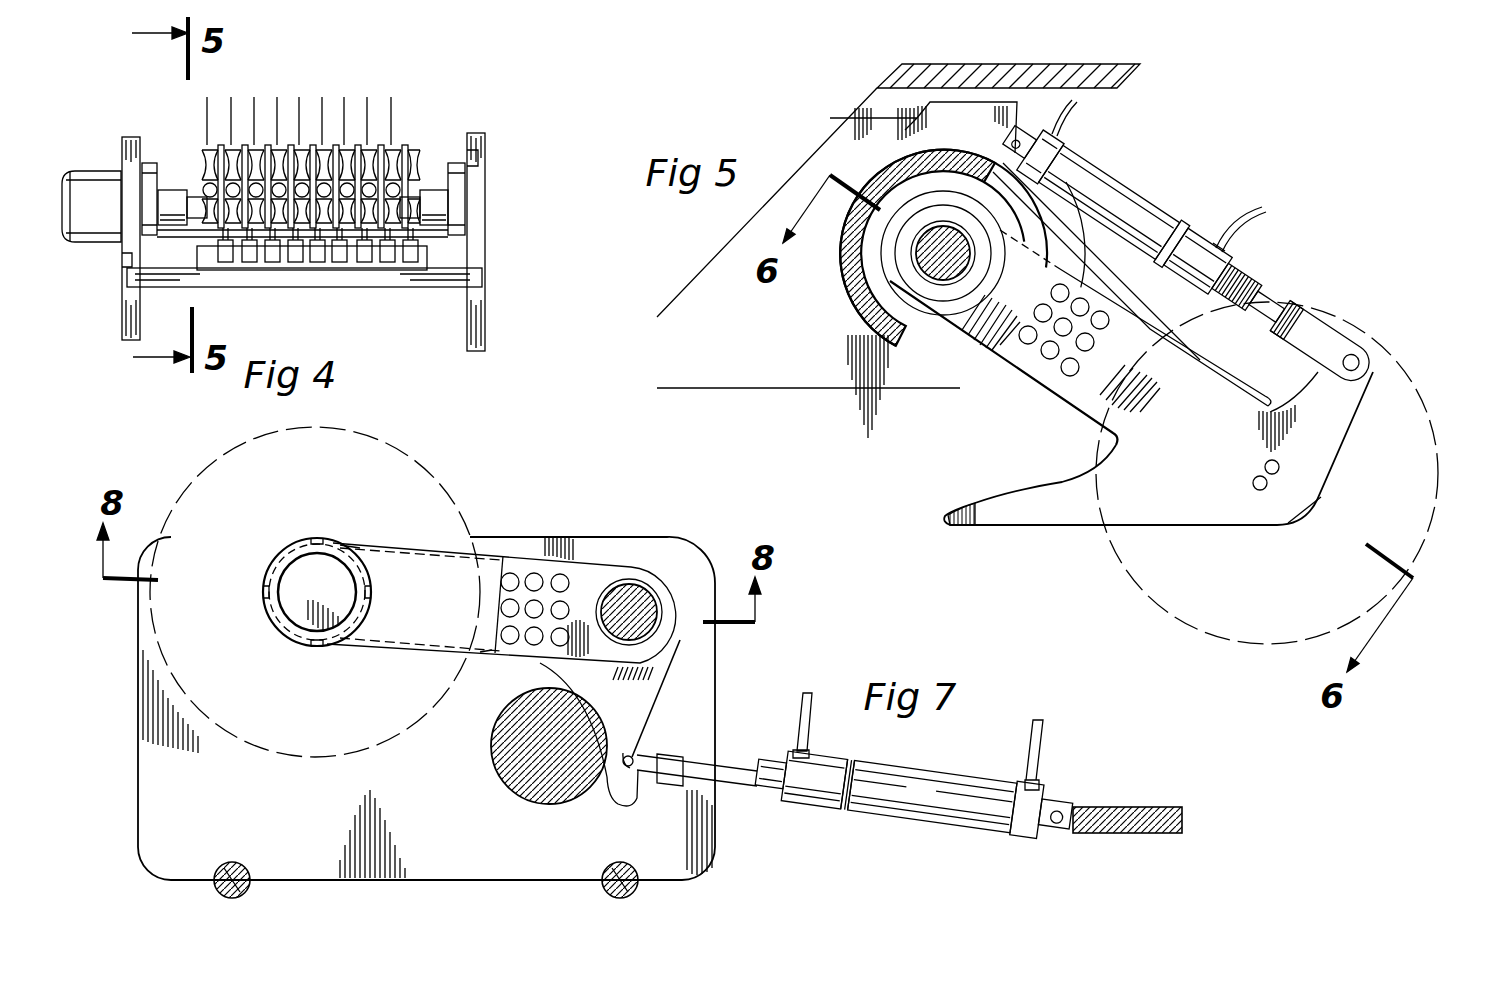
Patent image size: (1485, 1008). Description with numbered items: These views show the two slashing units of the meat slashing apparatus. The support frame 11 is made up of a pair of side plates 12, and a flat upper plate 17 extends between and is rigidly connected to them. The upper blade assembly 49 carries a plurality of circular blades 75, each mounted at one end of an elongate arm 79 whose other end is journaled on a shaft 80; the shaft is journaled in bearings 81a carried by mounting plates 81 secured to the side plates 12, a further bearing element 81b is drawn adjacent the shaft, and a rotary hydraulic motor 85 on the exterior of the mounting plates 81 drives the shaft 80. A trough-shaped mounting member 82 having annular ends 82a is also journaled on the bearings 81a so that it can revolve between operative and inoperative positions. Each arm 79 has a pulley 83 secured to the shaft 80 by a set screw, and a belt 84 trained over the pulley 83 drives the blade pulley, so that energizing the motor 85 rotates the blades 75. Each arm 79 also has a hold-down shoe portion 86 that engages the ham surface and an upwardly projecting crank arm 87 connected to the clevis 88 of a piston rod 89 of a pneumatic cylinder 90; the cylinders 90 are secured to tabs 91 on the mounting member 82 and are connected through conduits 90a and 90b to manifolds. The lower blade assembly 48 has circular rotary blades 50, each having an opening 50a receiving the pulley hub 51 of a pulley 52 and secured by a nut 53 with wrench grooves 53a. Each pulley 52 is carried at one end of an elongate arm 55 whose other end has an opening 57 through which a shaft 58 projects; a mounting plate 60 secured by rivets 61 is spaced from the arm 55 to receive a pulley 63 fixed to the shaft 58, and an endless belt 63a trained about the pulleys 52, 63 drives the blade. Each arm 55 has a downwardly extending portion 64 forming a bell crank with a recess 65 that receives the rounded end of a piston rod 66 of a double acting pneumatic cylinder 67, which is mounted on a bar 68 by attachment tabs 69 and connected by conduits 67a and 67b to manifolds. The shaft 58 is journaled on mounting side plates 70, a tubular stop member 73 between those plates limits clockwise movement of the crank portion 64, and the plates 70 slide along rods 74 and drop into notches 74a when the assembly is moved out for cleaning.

In FIG. 4, the support frame 11 is at (320, 242).
In FIG. 4, the side plates 12 is at (121, 310).
In FIG. 5, the side plates 12 is at (885, 100).
In FIG. 5, the upper plate 17 is at (1072, 63).
In FIG. 7, the lower blade assembly 48 is at (668, 673).
In FIG. 4, the upper blade assembly 49 is at (306, 154).
In FIG. 5, the upper blade assembly 49 is at (1110, 370).
In FIG. 7, the circular rotary blades 50 is at (408, 458).
In FIG. 7, the opening 50a is at (355, 568).
In FIG. 7, the pulley hub 51 is at (317, 592).
In FIG. 7, the pulley 52 is at (283, 553).
In FIG. 7, the nut 53 is at (350, 615).
In FIG. 7, the grooves 53a is at (265, 591).
In FIG. 7, the elongate arm 55 is at (487, 652).
In FIG. 7, the opening 57 is at (660, 655).
In FIG. 7, the shaft 58 is at (635, 606).
In FIG. 7, the mounting plate 60 is at (592, 575).
In FIG. 7, the rivets 61 is at (562, 574).
In FIG. 7, the pulley 63 is at (685, 628).
In FIG. 7, the endless belt 63a is at (574, 555).
In FIG. 7, the downwardly extending portion 64 is at (656, 728).
In FIG. 7, the recess 65 is at (622, 782).
In FIG. 7, the piston rod 66 is at (735, 772).
In FIG. 7, the double acting pneumatic cylinder 67 is at (898, 791).
In FIG. 7, the conduit 67a is at (1045, 738).
In FIG. 7, the conduit 67b is at (800, 705).
In FIG. 7, the bar 68 is at (1140, 806).
In FIG. 7, the attachment tabs 69 is at (1055, 814).
In FIG. 7, the mounting side plates 70 is at (407, 882).
In FIG. 7, the tubular stop member 73 is at (498, 762).
In FIG. 7, the rods 74 is at (245, 893).
In FIG. 7, the notches 74a is at (235, 865).
In FIG. 4, the circular blades 75 is at (254, 104).
In FIG. 5, the circular blades 75 is at (1127, 608).
In FIG. 5, the elongate arm 79 is at (1066, 401).
In FIG. 5, the shaft 80 is at (915, 268).
In FIG. 4, the mounting plates 81 is at (125, 263).
In FIG. 5, the mounting plates 81 is at (840, 150).
In FIG. 4, the bearings 81a is at (170, 190).
In FIG. 5, the bearings 81a is at (918, 312).
In FIG. 5, the bearing race 81b is at (920, 283).
In FIG. 4, the trough-shaped mounting member 82 is at (178, 250).
In FIG. 5, the trough-shaped mounting member 82 is at (835, 265).
In FIG. 4, the annular ends 82a is at (151, 163).
In FIG. 5, the annular ends 82a is at (940, 350).
In FIG. 5, the pulley 83 is at (895, 247).
In FIG. 5, the belt 84 is at (1068, 420).
In FIG. 4, the rotary hydraulic motor 85 is at (92, 244).
In FIG. 5, the hold-down shoe portion 86 is at (965, 522).
In FIG. 5, the crank arm 87 is at (1372, 387).
In FIG. 5, the clevis 88 is at (1323, 344).
In FIG. 5, the piston rod 89 is at (1250, 295).
In FIG. 5, the pneumatic cylinders 90 is at (1125, 213).
In FIG. 5, the conduit 90a is at (1080, 117).
In FIG. 5, the conduit 90b is at (1268, 206).
In FIG. 5, the tabs 91 is at (1020, 142).